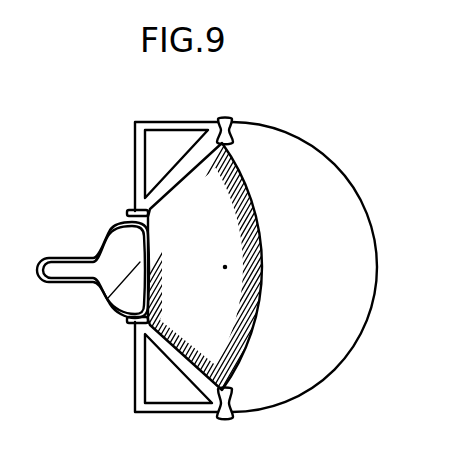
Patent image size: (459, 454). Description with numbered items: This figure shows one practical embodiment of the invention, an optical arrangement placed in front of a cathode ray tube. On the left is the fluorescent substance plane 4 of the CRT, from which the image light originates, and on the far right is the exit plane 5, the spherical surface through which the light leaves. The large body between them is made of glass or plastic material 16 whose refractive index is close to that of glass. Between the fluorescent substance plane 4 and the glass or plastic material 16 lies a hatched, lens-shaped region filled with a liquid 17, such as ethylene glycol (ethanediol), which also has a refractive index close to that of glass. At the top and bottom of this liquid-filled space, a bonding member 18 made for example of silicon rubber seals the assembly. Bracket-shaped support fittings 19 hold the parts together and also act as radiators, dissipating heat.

The fluorescent substance plane 4 is at (137, 272).
The exit plane 5 is at (314, 252).
The glass or plastic material 16 is at (297, 160).
The liquid 17 is at (217, 198).
The bonding member 18 is at (223, 117).
The support fitting 19 is at (152, 120).